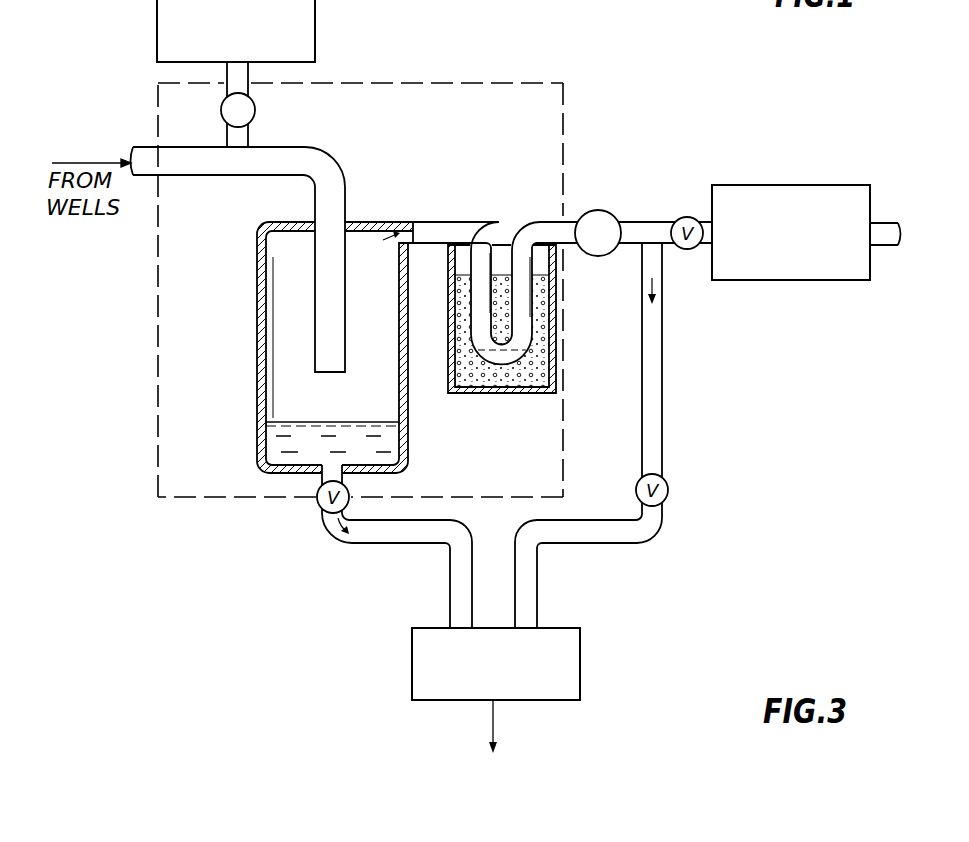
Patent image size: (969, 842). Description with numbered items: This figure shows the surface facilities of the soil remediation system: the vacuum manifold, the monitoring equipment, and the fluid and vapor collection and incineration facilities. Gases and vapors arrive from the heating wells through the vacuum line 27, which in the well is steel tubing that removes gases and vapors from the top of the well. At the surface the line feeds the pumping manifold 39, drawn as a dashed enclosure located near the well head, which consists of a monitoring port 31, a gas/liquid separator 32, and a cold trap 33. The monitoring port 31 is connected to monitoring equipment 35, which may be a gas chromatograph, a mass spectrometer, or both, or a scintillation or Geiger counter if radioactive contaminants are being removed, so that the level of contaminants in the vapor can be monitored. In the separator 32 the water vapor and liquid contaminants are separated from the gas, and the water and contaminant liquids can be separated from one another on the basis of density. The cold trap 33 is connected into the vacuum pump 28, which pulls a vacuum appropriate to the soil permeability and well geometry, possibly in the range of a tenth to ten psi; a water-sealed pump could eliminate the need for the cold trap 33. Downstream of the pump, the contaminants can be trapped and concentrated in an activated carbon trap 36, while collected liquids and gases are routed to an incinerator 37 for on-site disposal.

The vacuum line 27 is at (185, 178).
The vacuum pump 28 is at (602, 211).
The monitoring port 31 is at (250, 133).
The gas/liquid separator 32 is at (257, 357).
The cold trap 33 is at (523, 394).
The monitoring equipment 35 is at (318, 33).
The activated carbon trap 36 is at (800, 281).
The incinerator 37 is at (580, 672).
The pumping manifold 39 is at (477, 82).